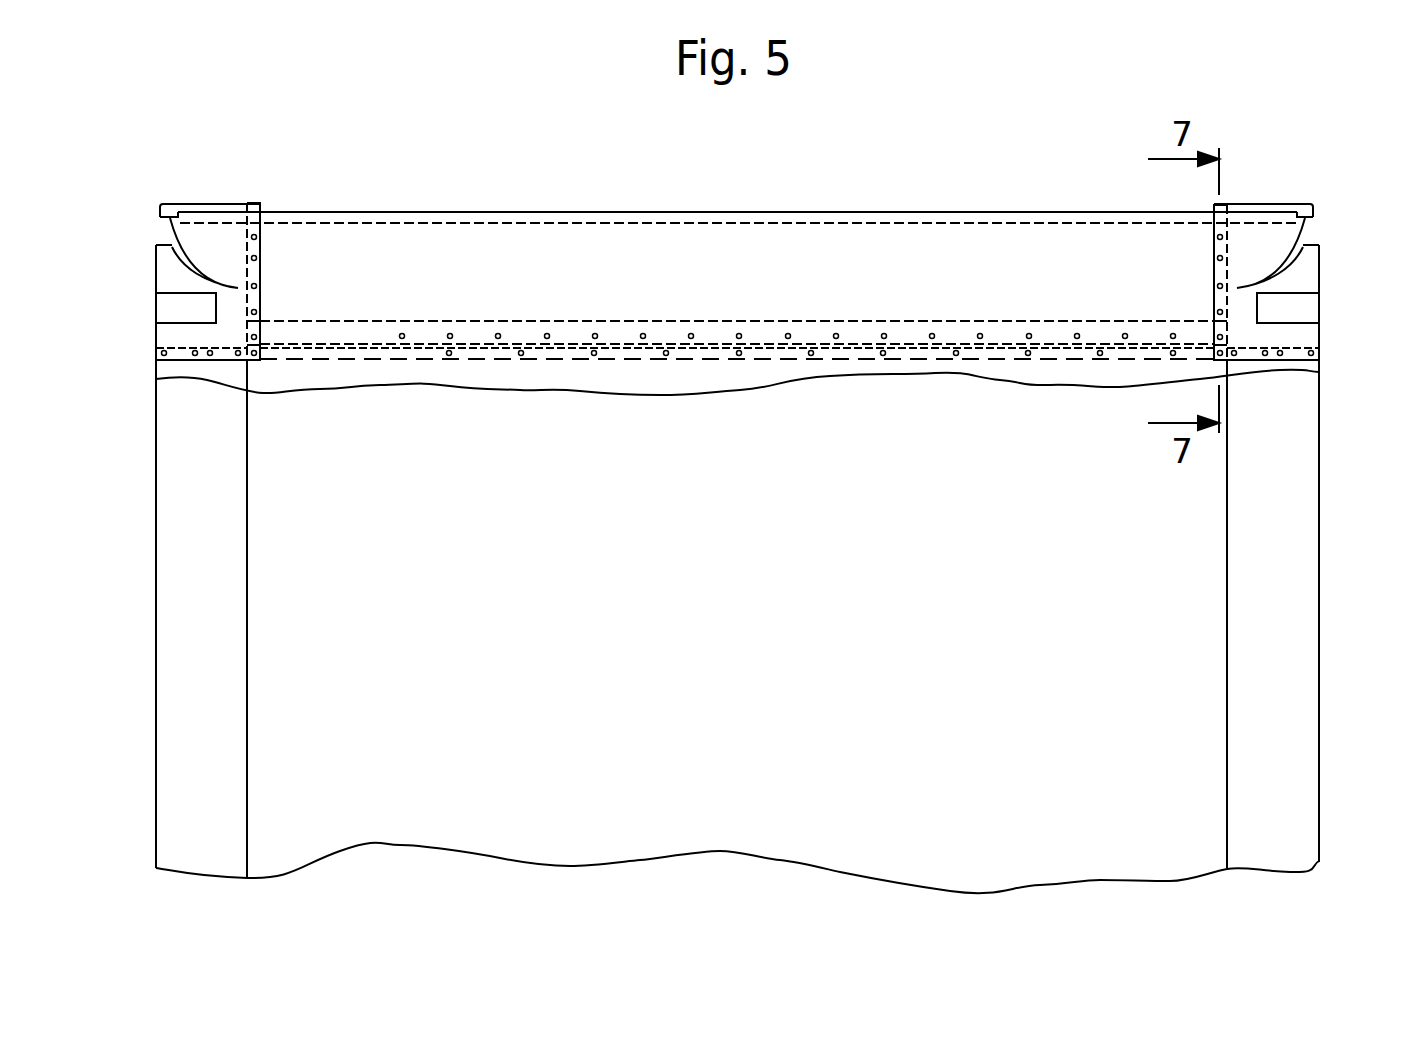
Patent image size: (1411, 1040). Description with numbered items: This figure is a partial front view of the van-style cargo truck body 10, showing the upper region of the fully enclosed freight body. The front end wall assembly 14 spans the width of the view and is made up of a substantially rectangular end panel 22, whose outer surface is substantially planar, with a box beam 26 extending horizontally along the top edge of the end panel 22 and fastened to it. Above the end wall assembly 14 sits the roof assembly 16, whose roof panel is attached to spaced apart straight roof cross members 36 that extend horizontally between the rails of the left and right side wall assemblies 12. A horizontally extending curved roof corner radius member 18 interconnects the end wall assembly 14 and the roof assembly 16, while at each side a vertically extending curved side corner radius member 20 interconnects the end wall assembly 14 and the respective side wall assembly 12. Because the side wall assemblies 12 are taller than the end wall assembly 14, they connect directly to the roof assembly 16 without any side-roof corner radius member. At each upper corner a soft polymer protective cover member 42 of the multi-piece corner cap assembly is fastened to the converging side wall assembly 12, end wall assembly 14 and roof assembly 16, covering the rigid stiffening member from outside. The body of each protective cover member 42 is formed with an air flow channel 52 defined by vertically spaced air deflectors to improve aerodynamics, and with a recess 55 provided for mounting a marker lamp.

The van-style cargo truck body 10 is at (972, 170).
The side wall assembly 12 is at (138, 692).
The end wall assembly 14 is at (1026, 856).
The roof assembly 16 is at (789, 200).
The roof corner radius member 18 is at (501, 243).
The side corner radius member 20 is at (162, 543).
The end panel 22 is at (911, 620).
The box beam 26 is at (473, 331).
The straight roof cross member 36 is at (636, 212).
The protective cover member 42 is at (138, 272).
The air flow channel 52 is at (166, 229).
The recess 55 is at (167, 308).